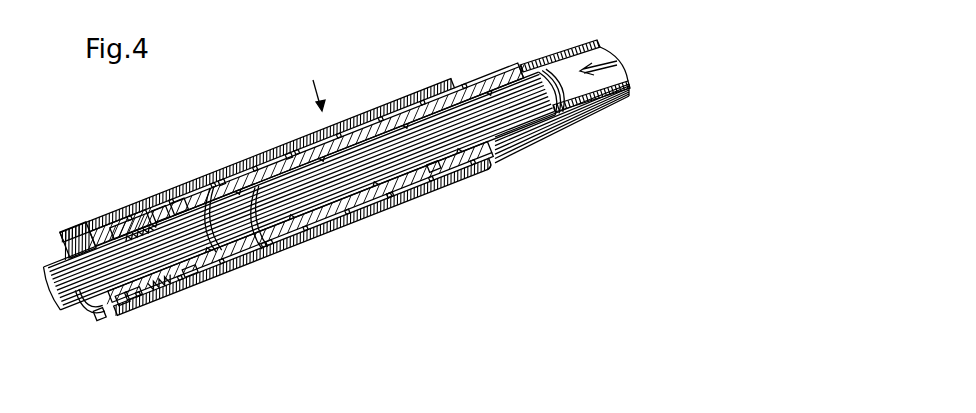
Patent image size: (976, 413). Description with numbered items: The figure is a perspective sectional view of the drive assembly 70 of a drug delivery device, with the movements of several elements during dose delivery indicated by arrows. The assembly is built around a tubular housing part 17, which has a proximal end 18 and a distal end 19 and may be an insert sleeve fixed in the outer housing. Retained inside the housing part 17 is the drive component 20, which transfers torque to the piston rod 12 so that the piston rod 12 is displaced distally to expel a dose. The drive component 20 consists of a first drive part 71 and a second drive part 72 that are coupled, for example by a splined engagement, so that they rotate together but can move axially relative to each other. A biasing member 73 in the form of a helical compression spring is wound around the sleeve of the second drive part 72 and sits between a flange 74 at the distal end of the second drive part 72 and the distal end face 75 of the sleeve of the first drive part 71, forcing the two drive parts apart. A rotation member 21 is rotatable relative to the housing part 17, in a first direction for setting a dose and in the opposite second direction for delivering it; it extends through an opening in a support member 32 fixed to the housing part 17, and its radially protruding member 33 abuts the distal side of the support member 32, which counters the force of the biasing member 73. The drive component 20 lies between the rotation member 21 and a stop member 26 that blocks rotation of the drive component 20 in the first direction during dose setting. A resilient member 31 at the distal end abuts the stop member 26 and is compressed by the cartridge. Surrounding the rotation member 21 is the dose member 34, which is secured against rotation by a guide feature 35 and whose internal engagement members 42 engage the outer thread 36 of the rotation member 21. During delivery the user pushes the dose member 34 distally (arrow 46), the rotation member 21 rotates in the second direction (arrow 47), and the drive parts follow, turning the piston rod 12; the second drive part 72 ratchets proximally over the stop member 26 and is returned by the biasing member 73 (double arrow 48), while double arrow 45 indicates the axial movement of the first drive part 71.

The piston rod 12 is at (476, 107).
The housing part 17 is at (132, 200).
The proximal end 18 is at (498, 170).
The distal end 19 is at (100, 318).
The drive component 20 is at (192, 272).
The rotation member 21 is at (323, 222).
The stop member 26 is at (123, 300).
The resilient member 31 is at (83, 310).
The support member 32 is at (233, 160).
The protruding member 33 is at (220, 177).
The dose member 34 is at (573, 53).
The guide feature 35 is at (530, 143).
The outer thread 36 is at (433, 167).
The engagement member 42 is at (255, 167).
The double arrow 45 is at (177, 200).
The arrow 46 is at (602, 63).
The arrow 47 is at (205, 190).
The double arrow 48 is at (87, 223).
The drive assembly 70 is at (311, 83).
The first drive part 71 is at (182, 187).
The second drive part 72 is at (118, 228).
The biasing member 73 is at (173, 280).
The flange 74 is at (112, 212).
The distal end face 75 is at (158, 208).